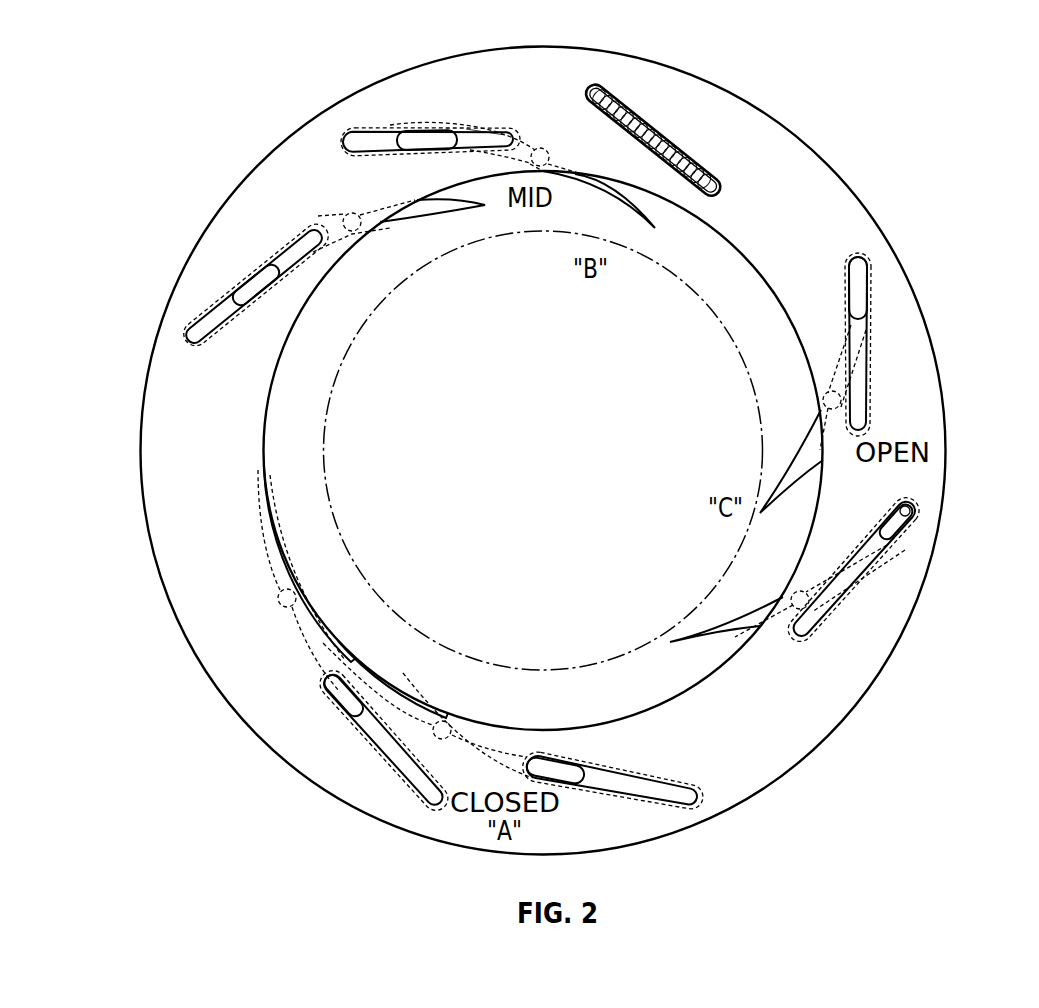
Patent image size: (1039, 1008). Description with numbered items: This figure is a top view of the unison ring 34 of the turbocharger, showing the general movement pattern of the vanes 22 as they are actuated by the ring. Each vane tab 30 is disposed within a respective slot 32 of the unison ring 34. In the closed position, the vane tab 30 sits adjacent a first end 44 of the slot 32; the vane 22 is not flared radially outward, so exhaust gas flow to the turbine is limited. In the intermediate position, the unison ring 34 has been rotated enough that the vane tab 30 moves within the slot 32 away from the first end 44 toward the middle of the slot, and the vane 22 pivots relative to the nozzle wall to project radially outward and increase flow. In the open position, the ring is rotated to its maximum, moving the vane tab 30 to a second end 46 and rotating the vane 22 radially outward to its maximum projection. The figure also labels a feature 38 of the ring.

The vane 22 is at (655, 217).
The vane tab 30 is at (425, 137).
The slot 32 is at (373, 147).
The unison ring 34 is at (897, 327).
The slot 38 is at (818, 618).
The first end of the slot 44 is at (466, 128).
The second end of the slot 46 is at (908, 521).